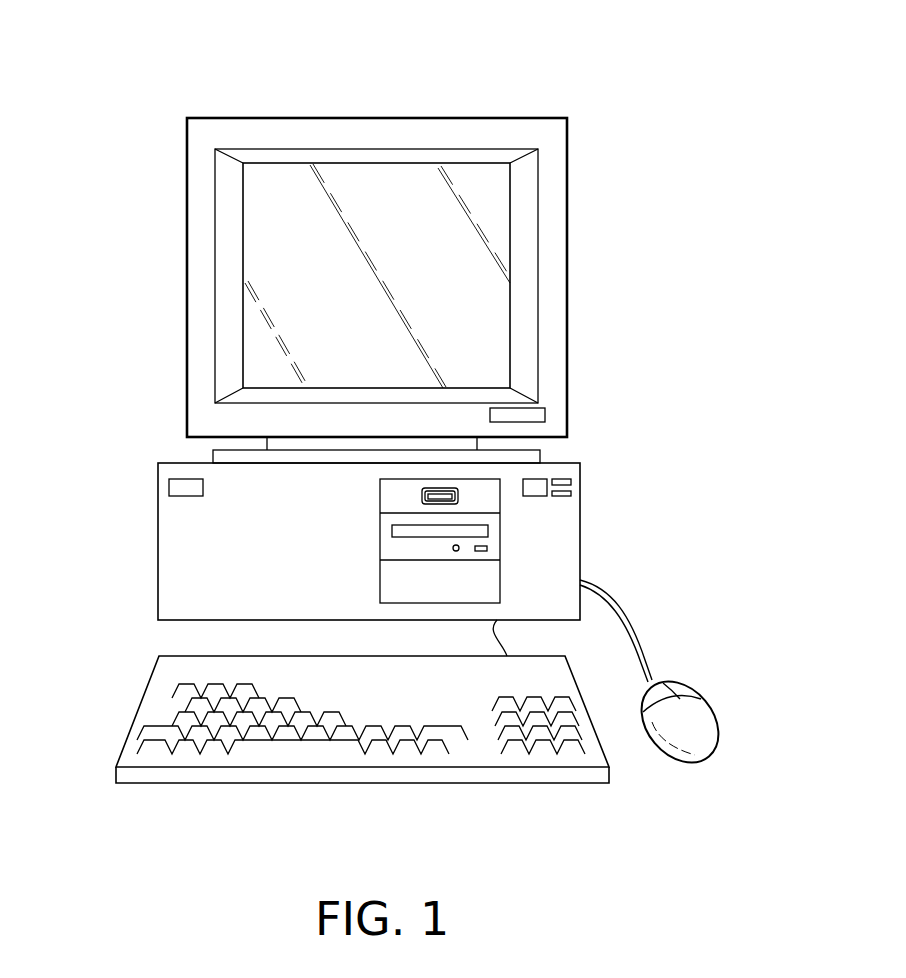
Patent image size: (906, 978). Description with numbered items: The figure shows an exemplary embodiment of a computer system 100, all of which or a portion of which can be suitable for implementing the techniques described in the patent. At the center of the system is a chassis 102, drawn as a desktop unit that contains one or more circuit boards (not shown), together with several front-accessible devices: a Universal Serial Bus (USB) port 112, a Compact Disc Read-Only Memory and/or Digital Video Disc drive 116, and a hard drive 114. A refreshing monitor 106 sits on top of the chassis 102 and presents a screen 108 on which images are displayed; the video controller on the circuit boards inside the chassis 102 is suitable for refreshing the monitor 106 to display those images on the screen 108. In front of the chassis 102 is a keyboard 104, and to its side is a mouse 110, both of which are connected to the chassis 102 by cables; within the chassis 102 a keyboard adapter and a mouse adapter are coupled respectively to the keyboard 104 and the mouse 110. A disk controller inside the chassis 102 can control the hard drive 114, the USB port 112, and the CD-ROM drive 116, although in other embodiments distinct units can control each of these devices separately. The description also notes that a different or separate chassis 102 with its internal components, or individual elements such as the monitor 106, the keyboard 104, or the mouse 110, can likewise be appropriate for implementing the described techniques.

The computer system 100 is at (558, 95).
The chassis 102 is at (158, 543).
The keyboard 104 is at (139, 708).
The refreshing monitor 106 is at (262, 118).
The screen 108 is at (292, 280).
The mouse 110 is at (700, 712).
The Universal Serial Bus (USB) port 112 is at (458, 493).
The hard drive 114 is at (490, 580).
The CD-ROM and/or DVD drive 116 is at (490, 538).